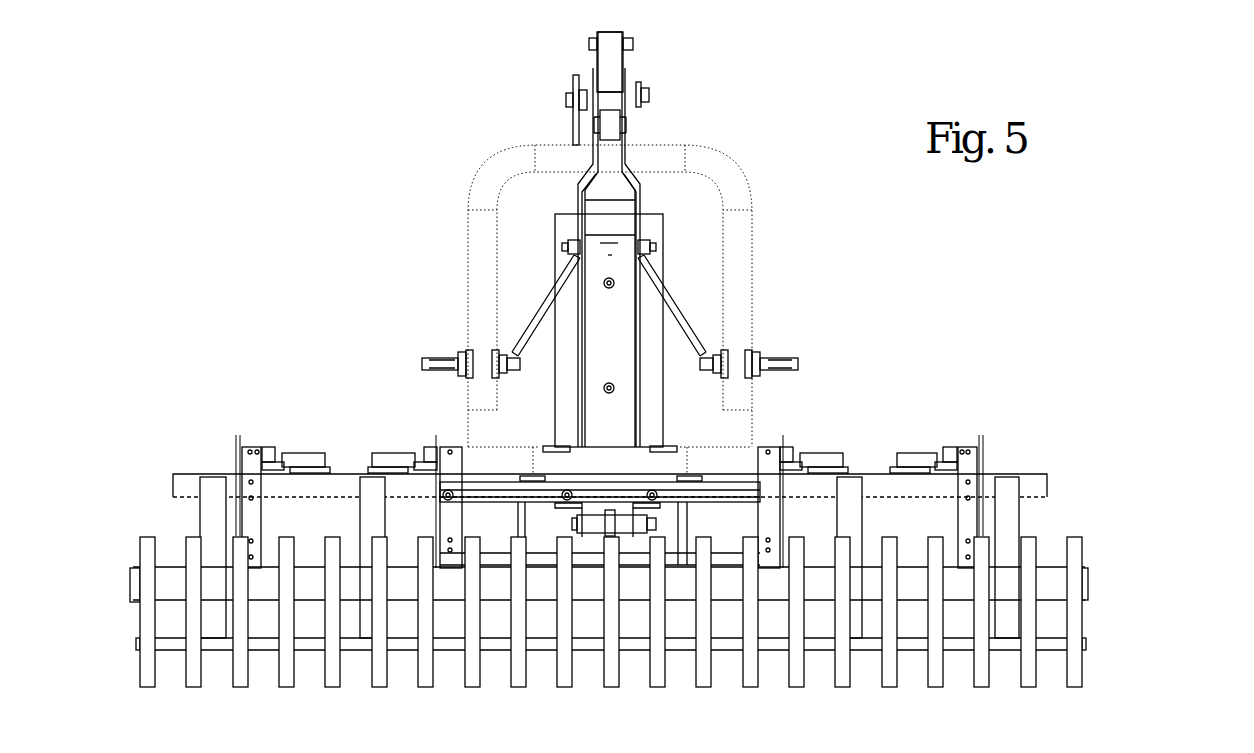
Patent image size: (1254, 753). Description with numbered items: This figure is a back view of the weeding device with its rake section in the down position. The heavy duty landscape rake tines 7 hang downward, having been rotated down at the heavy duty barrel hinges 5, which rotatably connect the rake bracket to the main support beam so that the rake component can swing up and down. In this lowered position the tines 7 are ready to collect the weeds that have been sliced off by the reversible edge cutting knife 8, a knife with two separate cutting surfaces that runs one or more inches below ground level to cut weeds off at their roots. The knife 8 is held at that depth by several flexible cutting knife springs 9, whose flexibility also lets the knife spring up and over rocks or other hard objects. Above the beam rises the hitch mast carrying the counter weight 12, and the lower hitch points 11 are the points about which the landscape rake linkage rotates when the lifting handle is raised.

The heavy duty barrel hinge 5 is at (908, 462).
The heavy duty landscape rake tines 7 is at (1072, 670).
The reversible edge cutting knife 8 is at (1082, 633).
The cutting knife spring 9 is at (1003, 513).
The lower hitch point 11 is at (802, 362).
The counter weight 12 is at (636, 303).